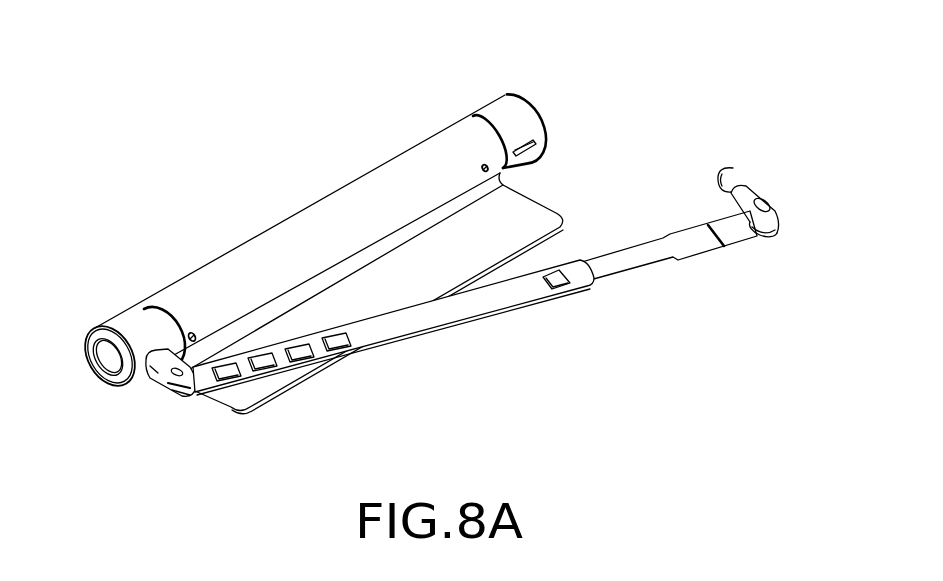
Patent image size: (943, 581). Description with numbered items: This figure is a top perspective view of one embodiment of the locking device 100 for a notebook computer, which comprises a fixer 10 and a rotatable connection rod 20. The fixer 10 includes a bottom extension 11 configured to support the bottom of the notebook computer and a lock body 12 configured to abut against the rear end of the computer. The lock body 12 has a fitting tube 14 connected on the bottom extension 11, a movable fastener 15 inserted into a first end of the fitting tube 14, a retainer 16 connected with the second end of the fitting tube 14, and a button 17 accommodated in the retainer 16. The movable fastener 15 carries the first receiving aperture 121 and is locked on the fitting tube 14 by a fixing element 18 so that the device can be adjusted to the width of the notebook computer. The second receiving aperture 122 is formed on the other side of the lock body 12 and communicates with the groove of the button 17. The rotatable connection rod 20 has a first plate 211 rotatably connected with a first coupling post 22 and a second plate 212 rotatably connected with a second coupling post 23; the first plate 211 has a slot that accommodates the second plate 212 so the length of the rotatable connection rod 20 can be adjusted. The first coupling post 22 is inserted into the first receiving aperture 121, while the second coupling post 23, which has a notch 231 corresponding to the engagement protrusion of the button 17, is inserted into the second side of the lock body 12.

The locking device 100 is at (137, 107).
The fixer 10 is at (120, 474).
The bottom extension 11 is at (220, 407).
The lock body 12 is at (142, 394).
The first receiving aperture 121 is at (153, 370).
The second receiving aperture 122 is at (532, 143).
The fitting tube 14 is at (302, 228).
The movable fastener 15 is at (103, 352).
The retainer 16 is at (498, 102).
The button 17 is at (538, 110).
The fixing element 18 is at (485, 165).
The rotatable connection rod 20 is at (468, 330).
The first plate 211 is at (578, 270).
The second plate 212 is at (686, 240).
The first coupling post 22 is at (138, 376).
The second coupling post 23 is at (752, 192).
The notch 231 is at (721, 170).